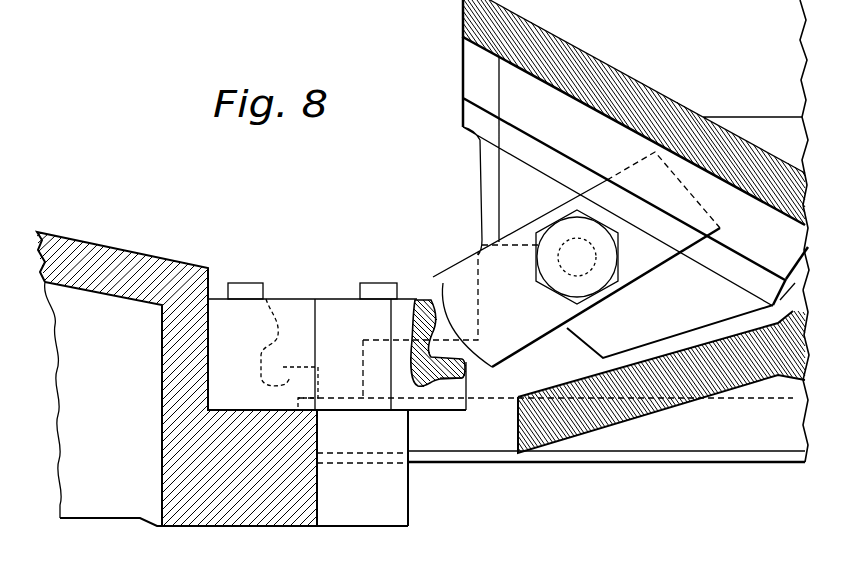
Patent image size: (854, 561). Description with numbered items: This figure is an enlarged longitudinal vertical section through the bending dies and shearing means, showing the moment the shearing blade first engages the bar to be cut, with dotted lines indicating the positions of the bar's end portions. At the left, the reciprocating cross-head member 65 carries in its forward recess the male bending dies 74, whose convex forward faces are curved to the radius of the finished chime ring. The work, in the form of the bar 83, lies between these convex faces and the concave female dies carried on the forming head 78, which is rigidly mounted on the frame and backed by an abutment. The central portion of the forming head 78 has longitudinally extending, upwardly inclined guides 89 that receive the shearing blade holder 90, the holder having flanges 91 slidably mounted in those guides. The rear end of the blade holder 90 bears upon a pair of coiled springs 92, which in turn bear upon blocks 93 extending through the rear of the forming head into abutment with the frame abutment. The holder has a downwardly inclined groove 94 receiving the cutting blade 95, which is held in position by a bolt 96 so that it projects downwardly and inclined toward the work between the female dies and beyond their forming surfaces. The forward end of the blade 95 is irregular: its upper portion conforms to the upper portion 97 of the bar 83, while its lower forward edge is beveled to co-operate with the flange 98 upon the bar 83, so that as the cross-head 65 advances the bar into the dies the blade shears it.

The cross-head member 65 is at (107, 245).
The male bending dies 74 is at (288, 299).
The forming head 78 is at (623, 82).
The bar 83 is at (413, 328).
The guides 89 is at (480, 97).
The shearing blade holder 90 is at (670, 322).
The flanges 91 is at (728, 258).
The coiled springs 92 is at (780, 283).
The blocks 93 is at (793, 312).
The groove 94 is at (537, 215).
The cutting blade 95 is at (581, 297).
The bolt 96 is at (418, 298).
The upper portion of the bar 97 is at (462, 379).
The flange 98 is at (441, 380).